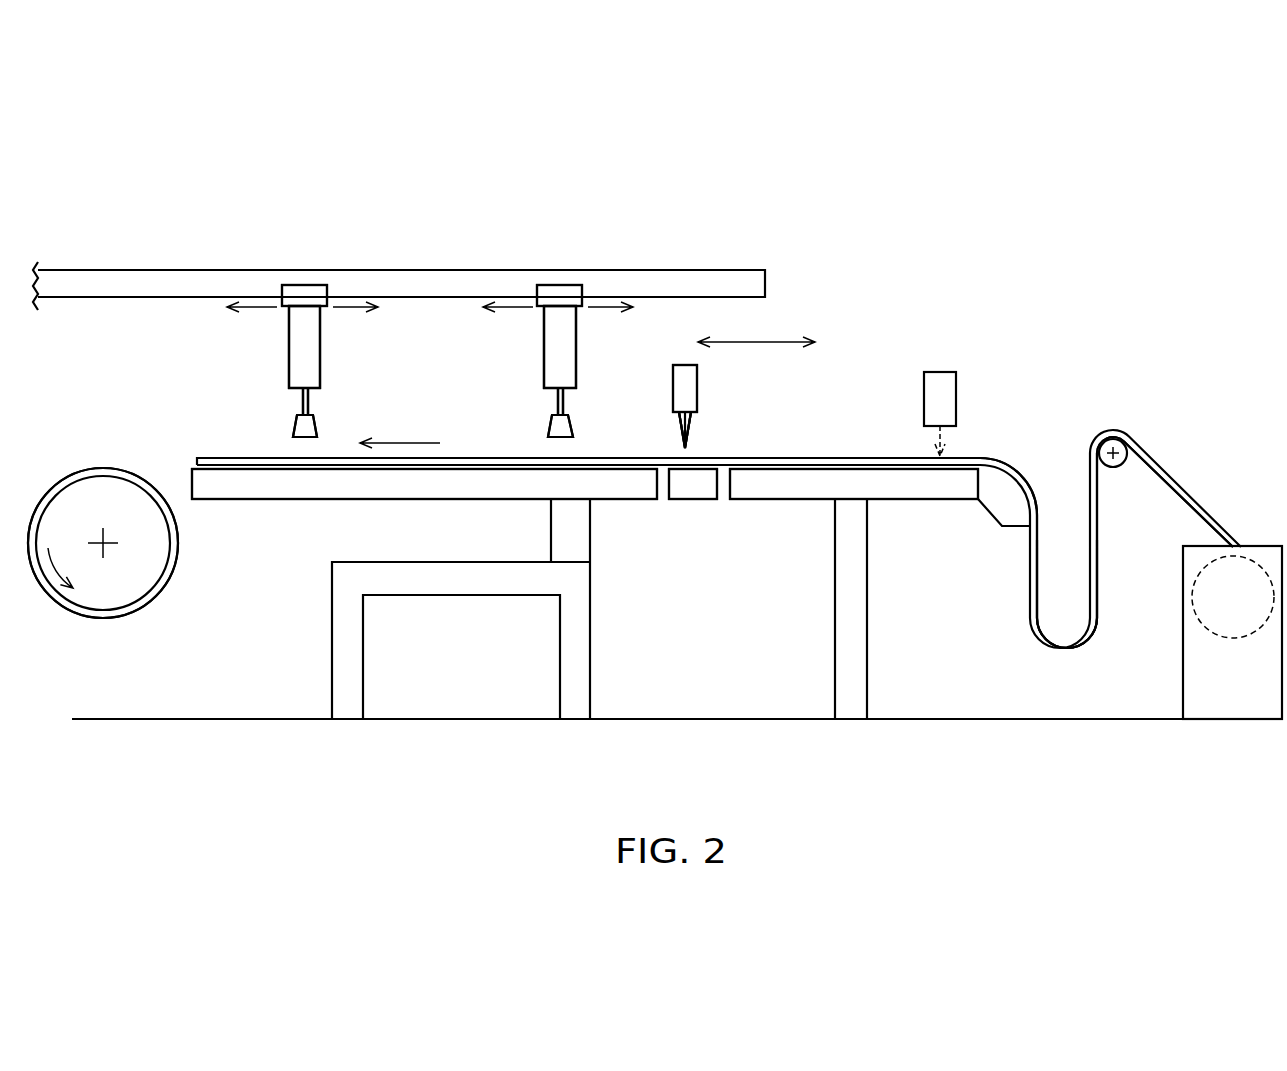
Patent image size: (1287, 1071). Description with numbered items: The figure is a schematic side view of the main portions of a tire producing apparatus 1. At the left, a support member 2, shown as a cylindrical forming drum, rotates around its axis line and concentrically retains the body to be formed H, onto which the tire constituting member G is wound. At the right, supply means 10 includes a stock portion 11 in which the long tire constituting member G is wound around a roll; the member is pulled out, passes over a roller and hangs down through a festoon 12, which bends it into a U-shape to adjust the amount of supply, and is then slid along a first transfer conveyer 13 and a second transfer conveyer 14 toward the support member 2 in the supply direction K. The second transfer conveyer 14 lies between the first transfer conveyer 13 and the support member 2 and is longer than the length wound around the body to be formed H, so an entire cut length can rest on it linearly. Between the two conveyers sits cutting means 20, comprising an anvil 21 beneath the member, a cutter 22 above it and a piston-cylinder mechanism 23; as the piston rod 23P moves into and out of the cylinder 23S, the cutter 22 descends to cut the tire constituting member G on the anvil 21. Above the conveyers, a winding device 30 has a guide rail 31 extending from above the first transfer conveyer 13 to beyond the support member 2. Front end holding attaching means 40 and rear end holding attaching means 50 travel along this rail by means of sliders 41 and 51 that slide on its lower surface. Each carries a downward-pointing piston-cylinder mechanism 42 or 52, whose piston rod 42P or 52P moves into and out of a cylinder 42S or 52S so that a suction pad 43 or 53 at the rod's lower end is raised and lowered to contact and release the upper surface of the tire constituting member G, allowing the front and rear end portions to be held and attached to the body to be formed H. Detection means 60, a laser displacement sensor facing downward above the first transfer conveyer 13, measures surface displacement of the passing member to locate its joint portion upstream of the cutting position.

The tire producing apparatus 1 is at (642, 126).
The support member 2 is at (112, 578).
The supply means 10 is at (1170, 422).
The stock portion 11 is at (1265, 552).
The festoon 12 is at (1017, 606).
The first transfer conveyer 13 is at (897, 505).
The second transfer conveyer 14 is at (278, 490).
The cutting means 20 is at (700, 594).
The anvil 21 is at (690, 500).
The cutter 22 is at (690, 437).
The piston-cylinder mechanism 23 is at (682, 364).
The cylinder 23S is at (697, 380).
The piston rod 23P is at (692, 415).
The winding device 30 is at (452, 256).
The guide rail 31 is at (130, 278).
The front end holding attaching means 40 is at (310, 273).
The slider 41 is at (318, 295).
The piston-cylinder mechanism 42 is at (287, 357).
The cylinder 42S is at (292, 330).
The piston rod 42P is at (302, 398).
The suction pad 43 is at (297, 422).
The rear end holding attaching means 50 is at (565, 273).
The slider 51 is at (572, 295).
The piston-cylinder mechanism 52 is at (542, 357).
The cylinder 52S is at (547, 330).
The piston rod 52P is at (557, 398).
The suction pad 53 is at (552, 422).
The detection means 60 is at (940, 375).
The tire constituting member G is at (624, 455).
The body to be formed H is at (153, 588).
The supply direction K is at (400, 425).